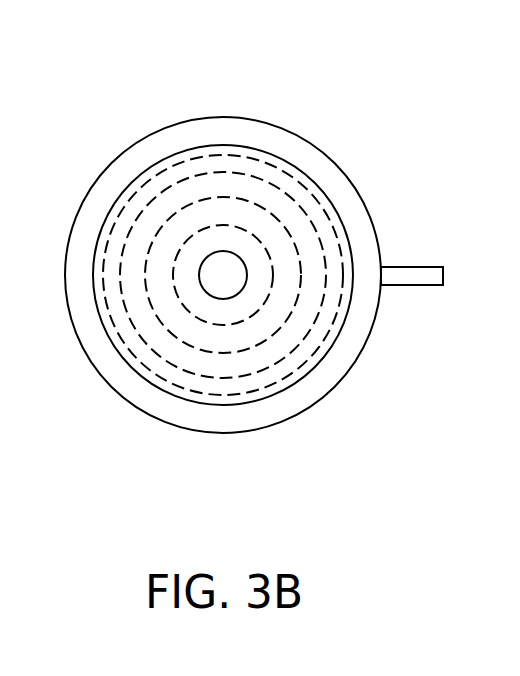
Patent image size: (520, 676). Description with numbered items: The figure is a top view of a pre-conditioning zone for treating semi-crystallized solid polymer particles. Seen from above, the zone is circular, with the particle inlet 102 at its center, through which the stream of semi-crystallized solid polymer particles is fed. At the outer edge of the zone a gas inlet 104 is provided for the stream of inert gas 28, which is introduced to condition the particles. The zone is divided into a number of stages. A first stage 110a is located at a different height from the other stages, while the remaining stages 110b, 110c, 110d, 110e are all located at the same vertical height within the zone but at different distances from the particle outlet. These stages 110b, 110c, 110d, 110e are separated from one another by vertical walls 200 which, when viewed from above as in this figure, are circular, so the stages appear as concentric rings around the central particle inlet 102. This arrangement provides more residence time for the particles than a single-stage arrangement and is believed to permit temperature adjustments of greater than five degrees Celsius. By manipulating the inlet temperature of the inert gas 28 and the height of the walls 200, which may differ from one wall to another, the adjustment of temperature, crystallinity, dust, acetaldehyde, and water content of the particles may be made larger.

The particle inlet 102 is at (242, 257).
The gas inlet 104 is at (382, 267).
The stream of inert gas 28 is at (435, 280).
The first stage 110a is at (212, 147).
The stage 110b is at (367, 320).
The stage 110c is at (282, 343).
The stage 110d is at (313, 345).
The stage 110e is at (232, 342).
The vertical walls 200 is at (172, 287).